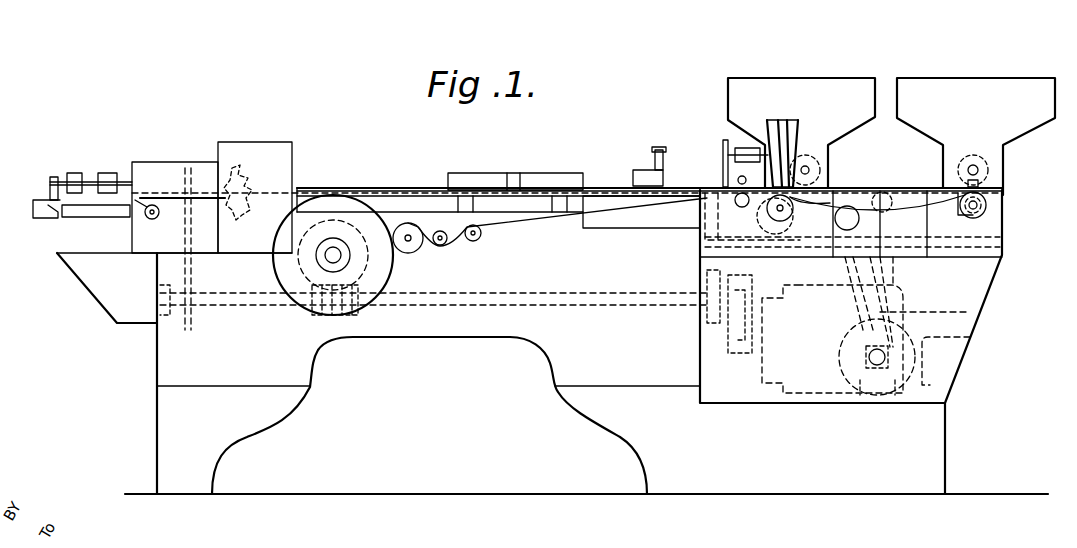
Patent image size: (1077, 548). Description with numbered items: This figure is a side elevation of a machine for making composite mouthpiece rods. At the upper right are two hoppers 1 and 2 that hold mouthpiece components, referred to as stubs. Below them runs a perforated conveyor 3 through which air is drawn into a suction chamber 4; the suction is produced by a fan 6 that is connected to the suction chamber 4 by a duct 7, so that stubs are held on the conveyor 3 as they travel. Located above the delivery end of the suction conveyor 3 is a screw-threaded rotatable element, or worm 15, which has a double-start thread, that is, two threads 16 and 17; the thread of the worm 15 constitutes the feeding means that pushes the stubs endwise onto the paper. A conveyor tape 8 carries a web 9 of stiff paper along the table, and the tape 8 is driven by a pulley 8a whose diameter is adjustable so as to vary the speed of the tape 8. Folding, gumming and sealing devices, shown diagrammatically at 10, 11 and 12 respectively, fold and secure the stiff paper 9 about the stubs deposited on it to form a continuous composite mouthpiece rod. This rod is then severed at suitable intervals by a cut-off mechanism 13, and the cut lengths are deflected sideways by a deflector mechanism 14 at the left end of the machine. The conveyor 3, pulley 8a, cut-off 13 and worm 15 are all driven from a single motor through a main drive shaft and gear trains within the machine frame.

The hopper 1 is at (990, 83).
The hopper 2 is at (823, 87).
The perforated conveyor 3 is at (913, 188).
The suction chamber 4 is at (857, 188).
The fan 6 is at (925, 357).
The duct 7 is at (887, 273).
The conveyor tape 8 is at (665, 210).
The pulley 8a is at (275, 265).
The web of stiff paper 9 is at (762, 200).
The folding device 10 is at (708, 185).
The gumming device 11 is at (655, 152).
The sealing device 12 is at (508, 188).
The cut-off mechanism 13 is at (237, 170).
The deflector mechanism 14 is at (108, 175).
The worm 15 is at (782, 122).
The thread 16 is at (767, 127).
The thread 17 is at (792, 142).